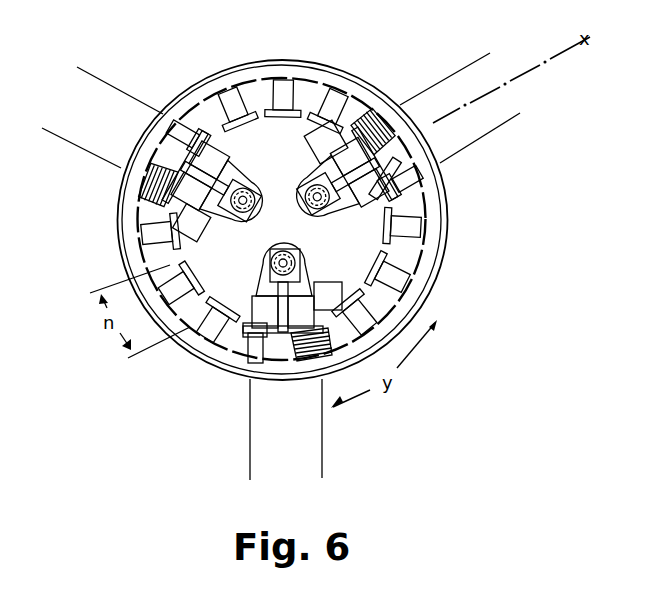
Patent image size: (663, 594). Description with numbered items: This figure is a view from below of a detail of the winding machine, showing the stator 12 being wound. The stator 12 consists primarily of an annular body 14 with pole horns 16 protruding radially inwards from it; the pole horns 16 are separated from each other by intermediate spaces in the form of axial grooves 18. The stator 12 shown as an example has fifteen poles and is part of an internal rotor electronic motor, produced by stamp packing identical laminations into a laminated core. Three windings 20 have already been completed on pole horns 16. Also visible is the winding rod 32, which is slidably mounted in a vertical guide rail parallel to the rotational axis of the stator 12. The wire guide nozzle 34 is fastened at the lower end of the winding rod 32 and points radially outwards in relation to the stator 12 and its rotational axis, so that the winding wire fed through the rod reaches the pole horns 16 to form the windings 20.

The stator 12 is at (197, 82).
The annular body 14 is at (128, 193).
The pole horns 16 is at (135, 242).
The axial grooves 18 is at (265, 80).
The windings 20 is at (377, 107).
The winding rod 32 is at (350, 216).
The wire guide nozzle 34 is at (352, 190).